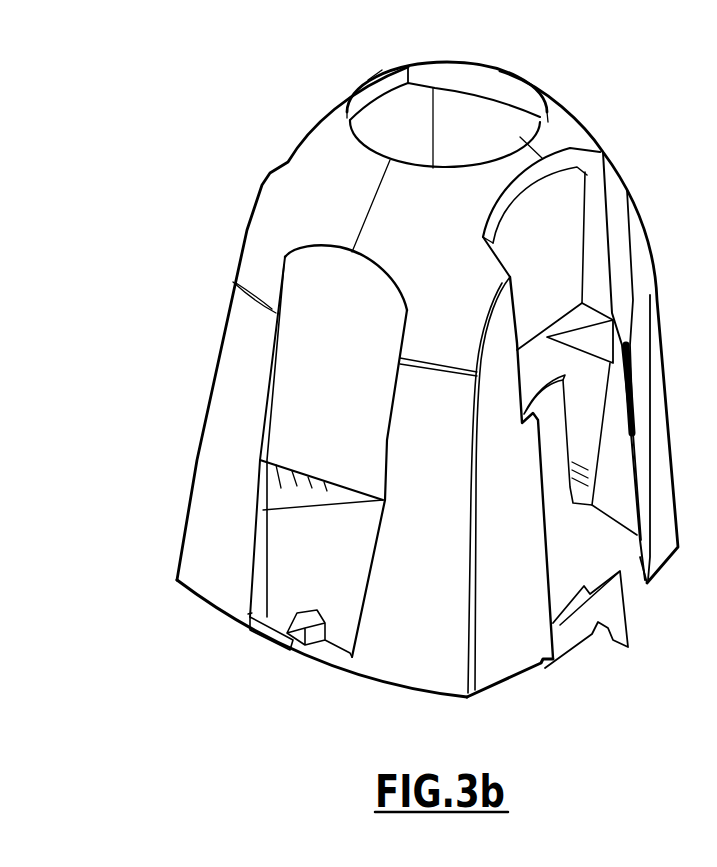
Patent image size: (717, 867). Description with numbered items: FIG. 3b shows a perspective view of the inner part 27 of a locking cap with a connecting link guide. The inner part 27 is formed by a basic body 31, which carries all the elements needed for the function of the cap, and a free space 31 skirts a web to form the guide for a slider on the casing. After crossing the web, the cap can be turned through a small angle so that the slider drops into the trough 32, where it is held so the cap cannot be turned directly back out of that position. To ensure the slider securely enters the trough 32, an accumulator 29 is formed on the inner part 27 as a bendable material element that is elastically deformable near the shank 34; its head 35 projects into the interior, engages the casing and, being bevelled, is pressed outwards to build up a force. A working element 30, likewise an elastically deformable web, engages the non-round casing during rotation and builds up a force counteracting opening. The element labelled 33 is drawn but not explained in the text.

The inner part 27 is at (278, 129).
The accumulator 29 is at (604, 661).
The working element 30 is at (558, 493).
The basic body 31 is at (652, 408).
The trough 32 is at (338, 618).
The retaining bar 33 is at (270, 633).
The shank 34 is at (585, 635).
The head 35 is at (612, 612).